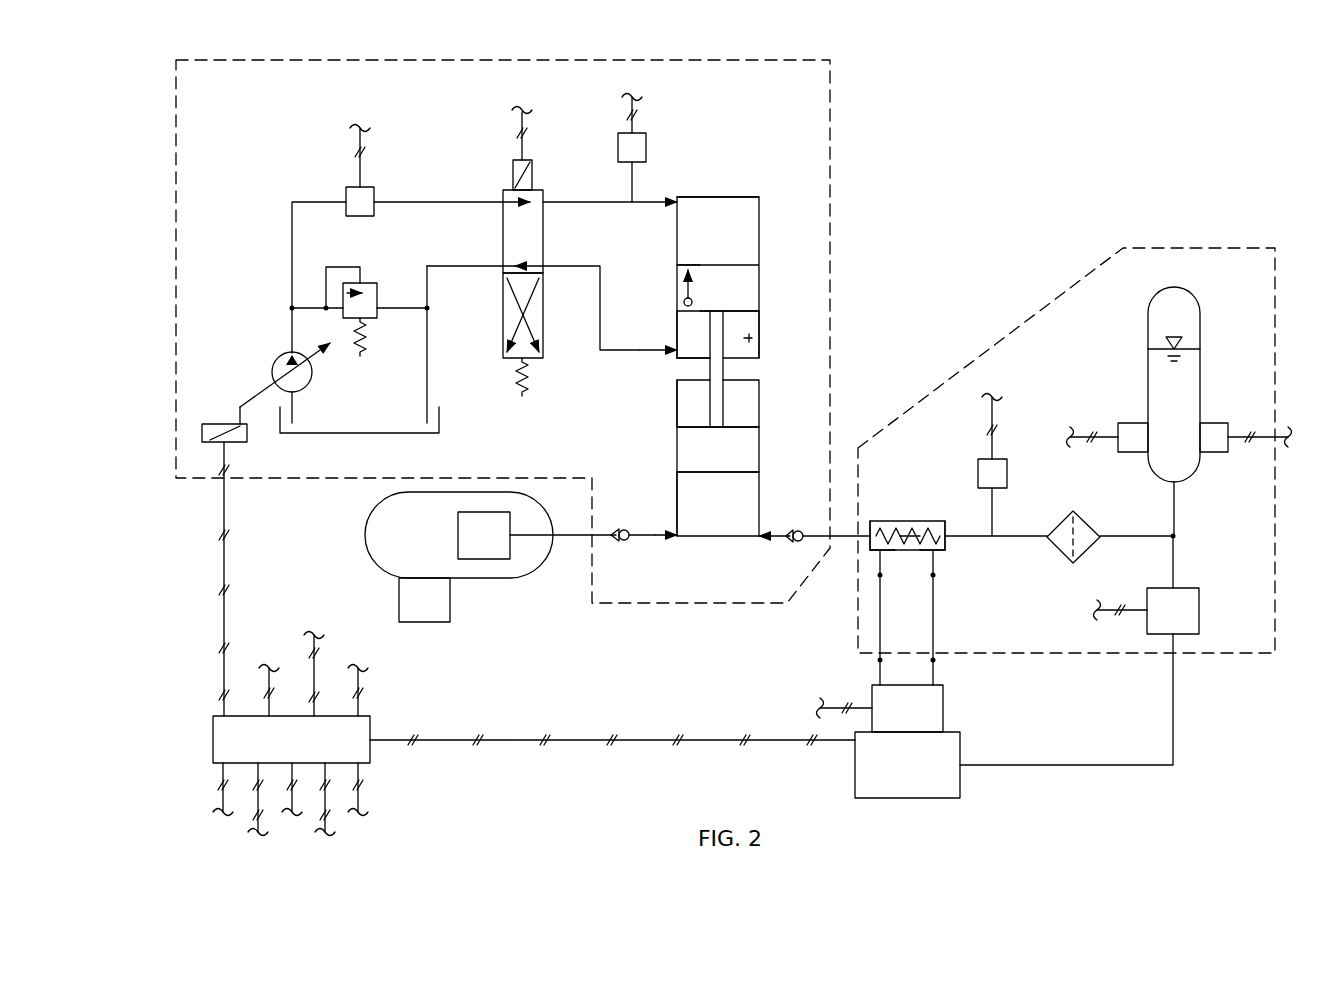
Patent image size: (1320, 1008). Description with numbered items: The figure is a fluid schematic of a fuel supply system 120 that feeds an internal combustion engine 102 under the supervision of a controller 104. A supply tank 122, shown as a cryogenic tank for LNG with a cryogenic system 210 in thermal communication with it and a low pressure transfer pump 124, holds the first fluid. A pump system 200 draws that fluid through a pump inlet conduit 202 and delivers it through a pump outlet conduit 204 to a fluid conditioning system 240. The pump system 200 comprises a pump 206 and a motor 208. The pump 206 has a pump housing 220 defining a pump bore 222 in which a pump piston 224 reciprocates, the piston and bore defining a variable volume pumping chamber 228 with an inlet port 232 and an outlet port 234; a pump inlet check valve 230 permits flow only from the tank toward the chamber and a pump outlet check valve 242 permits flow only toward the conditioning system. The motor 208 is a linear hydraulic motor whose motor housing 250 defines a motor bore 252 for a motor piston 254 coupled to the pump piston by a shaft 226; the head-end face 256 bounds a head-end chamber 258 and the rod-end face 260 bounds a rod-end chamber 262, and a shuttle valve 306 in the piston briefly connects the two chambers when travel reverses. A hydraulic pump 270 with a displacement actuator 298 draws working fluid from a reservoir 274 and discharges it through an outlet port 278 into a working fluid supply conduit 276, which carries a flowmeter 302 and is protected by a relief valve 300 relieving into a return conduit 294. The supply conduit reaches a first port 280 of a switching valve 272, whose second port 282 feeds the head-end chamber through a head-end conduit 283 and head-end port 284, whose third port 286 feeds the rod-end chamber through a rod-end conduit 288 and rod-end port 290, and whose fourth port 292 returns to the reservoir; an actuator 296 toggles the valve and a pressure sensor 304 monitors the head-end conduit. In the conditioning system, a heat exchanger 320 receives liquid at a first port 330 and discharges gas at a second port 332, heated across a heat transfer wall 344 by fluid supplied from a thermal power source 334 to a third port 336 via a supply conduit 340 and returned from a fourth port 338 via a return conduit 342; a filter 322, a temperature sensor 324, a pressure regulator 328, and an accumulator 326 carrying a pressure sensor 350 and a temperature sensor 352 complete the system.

The internal combustion engine 102 is at (895, 776).
The controller 104 is at (279, 746).
The fuel supply system 120 is at (1016, 158).
The supply tank 122 is at (403, 543).
The low pressure transfer pump 124 is at (472, 546).
The pump system 200 is at (834, 192).
The pump inlet conduit 202 is at (567, 540).
The pump outlet conduit 204 is at (771, 528).
The pump 206 is at (665, 430).
The motor 208 is at (770, 255).
The cryogenic system 210 is at (413, 611).
The pump housing 220 is at (677, 406).
The pump bore 222 is at (677, 497).
The pump piston 224 is at (706, 463).
The shaft 226 is at (727, 368).
The pumping chamber 228 is at (706, 516).
The pump inlet check valve 230 is at (617, 542).
The inlet port 232 is at (673, 542).
The outlet port 234 is at (764, 542).
The fluid conditioning system 240 is at (1238, 246).
The pump outlet check valve 242 is at (793, 528).
The motor housing 250 is at (676, 322).
The motor bore 252 is at (688, 332).
The motor piston 254 is at (716, 298).
The head-end face 256 is at (700, 265).
The head-end chamber 258 is at (706, 241).
The rod-end face 260 is at (759, 312).
The rod-end chamber 262 is at (752, 340).
The hydraulic pump 270 is at (310, 380).
The switching valve 272 is at (550, 333).
The reservoir 274 is at (364, 433).
The working fluid supply conduit 276 is at (292, 249).
The outlet port 278 is at (288, 350).
The first port 280 is at (503, 199).
The second port 282 is at (545, 202).
The head-end conduit 283 is at (653, 203).
The head-end port 284 is at (676, 197).
The third port 286 is at (545, 266).
The rod-end conduit 288 is at (598, 333).
The rod-end port 290 is at (672, 355).
The fourth port 292 is at (500, 264).
The return conduit 294 is at (427, 368).
The actuator 296 is at (513, 176).
The displacement actuator 298 is at (211, 424).
The relief valve 300 is at (368, 283).
The flowmeter 302 is at (343, 194).
The pressure sensor 304 is at (646, 147).
The shuttle valve 306 is at (686, 290).
The heat exchanger 320 is at (878, 520).
The filter 322 is at (1088, 550).
The temperature sensor 324 is at (1007, 473).
The accumulator 326 is at (1162, 416).
The pressure regulator 328 is at (1161, 622).
The first port 330 is at (866, 542).
The second port 332 is at (947, 532).
The thermal power source 334 is at (895, 720).
The third port 336 is at (884, 555).
The fourth port 338 is at (940, 552).
The supply conduit 340 is at (878, 634).
The return conduit 342 is at (935, 627).
The heat transfer wall 344 is at (907, 522).
The pressure sensor 350 is at (1120, 423).
The temperature sensor 352 is at (1218, 423).